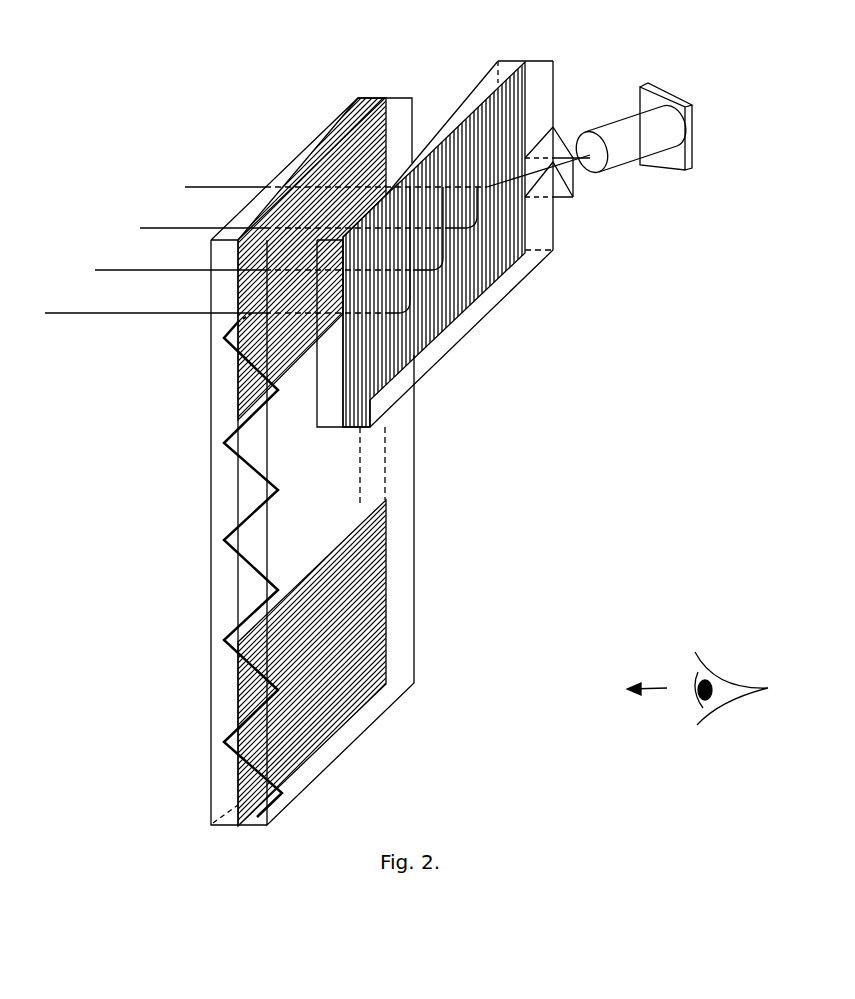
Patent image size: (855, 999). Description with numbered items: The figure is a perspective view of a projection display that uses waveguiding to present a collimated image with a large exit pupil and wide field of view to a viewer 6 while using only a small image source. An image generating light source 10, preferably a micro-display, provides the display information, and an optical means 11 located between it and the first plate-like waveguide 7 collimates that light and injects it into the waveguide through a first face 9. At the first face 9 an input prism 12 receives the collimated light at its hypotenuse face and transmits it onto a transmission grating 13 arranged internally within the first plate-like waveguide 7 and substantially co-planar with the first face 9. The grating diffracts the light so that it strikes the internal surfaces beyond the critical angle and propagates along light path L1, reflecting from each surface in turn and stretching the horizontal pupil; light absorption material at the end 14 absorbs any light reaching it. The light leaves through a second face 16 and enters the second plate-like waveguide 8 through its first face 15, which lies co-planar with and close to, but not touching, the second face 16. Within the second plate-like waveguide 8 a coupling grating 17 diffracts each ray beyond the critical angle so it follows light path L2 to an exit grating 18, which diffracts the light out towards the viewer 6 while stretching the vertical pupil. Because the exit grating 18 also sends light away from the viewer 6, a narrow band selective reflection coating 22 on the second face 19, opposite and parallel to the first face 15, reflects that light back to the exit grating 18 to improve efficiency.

The viewer 6 is at (725, 690).
The first plate-like waveguide 7 is at (540, 60).
The second plate-like waveguide 8 is at (415, 630).
The first face 9 is at (510, 277).
The image generating light source 10 is at (692, 142).
The optical means 11 is at (625, 150).
The input prism 12 is at (563, 199).
The transmission grating 13 is at (521, 62).
The end 14 is at (323, 380).
The first face 15 is at (333, 486).
The second face 16 is at (458, 102).
The coupling grating 17 is at (333, 155).
The exit grating 18 is at (372, 593).
The second face 19 is at (212, 788).
The narrow band selective reflection coating 22 is at (222, 690).
The light path L1 is at (385, 312).
The light path L2 is at (277, 803).